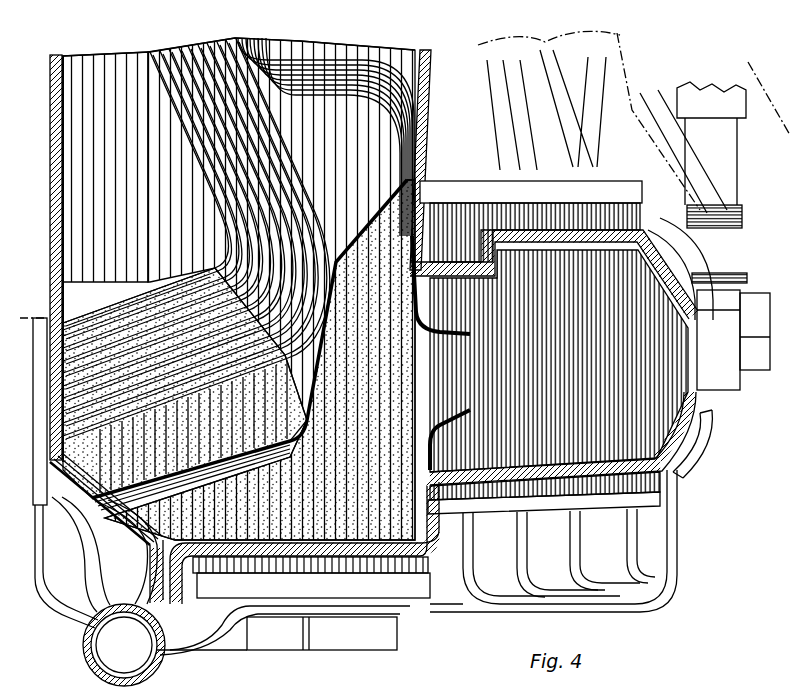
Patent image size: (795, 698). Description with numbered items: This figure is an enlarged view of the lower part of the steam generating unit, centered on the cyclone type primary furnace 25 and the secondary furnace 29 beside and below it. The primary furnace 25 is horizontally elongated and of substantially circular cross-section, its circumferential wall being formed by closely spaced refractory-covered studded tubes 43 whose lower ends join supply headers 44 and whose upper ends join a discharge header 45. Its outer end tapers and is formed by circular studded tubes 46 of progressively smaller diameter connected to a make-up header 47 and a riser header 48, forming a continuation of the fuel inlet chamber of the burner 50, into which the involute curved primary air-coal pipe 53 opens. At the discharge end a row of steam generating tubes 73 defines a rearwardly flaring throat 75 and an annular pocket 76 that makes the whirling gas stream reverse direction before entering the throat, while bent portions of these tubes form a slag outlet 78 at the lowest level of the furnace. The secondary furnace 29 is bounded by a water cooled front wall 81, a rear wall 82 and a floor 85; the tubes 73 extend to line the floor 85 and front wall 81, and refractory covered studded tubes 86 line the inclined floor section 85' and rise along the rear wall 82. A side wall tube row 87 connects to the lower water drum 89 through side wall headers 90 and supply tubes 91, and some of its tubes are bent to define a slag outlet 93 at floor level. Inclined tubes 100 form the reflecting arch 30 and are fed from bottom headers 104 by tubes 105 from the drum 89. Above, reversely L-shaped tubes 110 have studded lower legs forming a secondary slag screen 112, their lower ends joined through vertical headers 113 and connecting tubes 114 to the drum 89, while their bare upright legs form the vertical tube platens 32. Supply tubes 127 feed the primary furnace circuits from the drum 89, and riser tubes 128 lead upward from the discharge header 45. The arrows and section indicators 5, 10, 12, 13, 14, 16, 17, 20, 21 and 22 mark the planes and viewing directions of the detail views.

The section line 5 is at (26, 282).
The heat exchanger 10 is at (150, 398).
The flow direction 12 is at (617, 173).
The gap width 13 is at (492, 363).
The section line 14 is at (47, 440).
The return tube 16 is at (450, 292).
The tube end spacing 17 is at (75, 296).
The tube bend 20 is at (370, 252).
The partition wall 21 is at (325, 364).
The spacing 22 is at (604, 373).
The cyclone type primary furnace 25 is at (586, 354).
The secondary furnace 29 is at (332, 172).
The reflecting arch 30 is at (326, 344).
The vertical tube platens 32 is at (190, 146).
The studded tubes 43 is at (598, 458).
The supply headers 44 is at (545, 505).
The discharge header 45 is at (543, 181).
The circular studded tubes 46 is at (658, 420).
The make-up header 47 is at (688, 442).
The riser header 48 is at (668, 270).
The primary coal burner 50 is at (724, 380).
The primary air-coal pipe 53 is at (722, 160).
The steam generating tubes 73 is at (428, 548).
The throat section 75 is at (448, 433).
The annular pocket 76 is at (435, 442).
The slag outlet 78 is at (392, 448).
The front wall 81 is at (425, 135).
The rear wall 82 is at (50, 178).
The floor 85 is at (192, 477).
The inclined floor section 85' is at (254, 517).
The refractory covered studded tubes 86 is at (62, 166).
The side wall tube row 87 is at (222, 468).
The lower water drum 89 is at (134, 656).
The side wall headers 90 is at (326, 599).
The supply tubes 91 is at (400, 632).
The slag outlet 93 is at (370, 478).
The inclined tubes 100 is at (372, 212).
The bottom headers 104 is at (95, 530).
The supply tubes 105 is at (120, 548).
The reversely L-shaped tubes 110 is at (175, 268).
The secondary slag screen 112 is at (193, 427).
The vertical headers 113 is at (36, 405).
The connecting tubes 114 is at (80, 605).
The supply tubes 127 is at (670, 598).
The riser tubes 128 is at (508, 118).